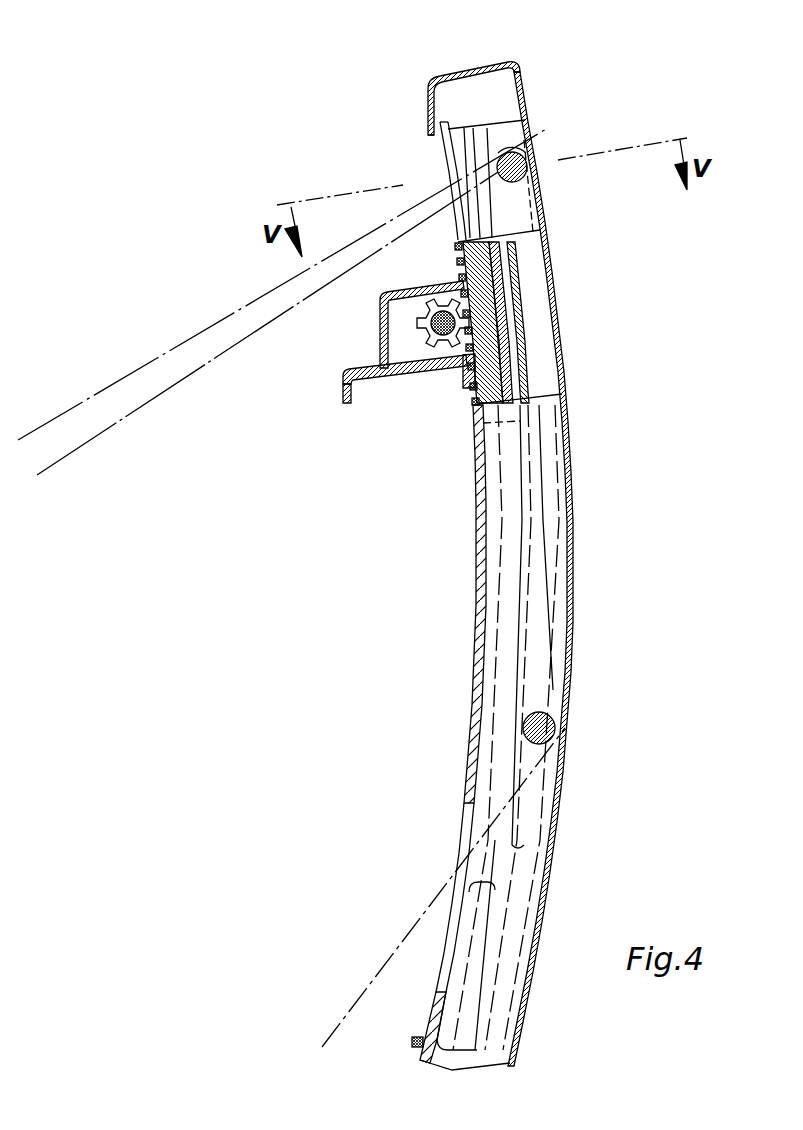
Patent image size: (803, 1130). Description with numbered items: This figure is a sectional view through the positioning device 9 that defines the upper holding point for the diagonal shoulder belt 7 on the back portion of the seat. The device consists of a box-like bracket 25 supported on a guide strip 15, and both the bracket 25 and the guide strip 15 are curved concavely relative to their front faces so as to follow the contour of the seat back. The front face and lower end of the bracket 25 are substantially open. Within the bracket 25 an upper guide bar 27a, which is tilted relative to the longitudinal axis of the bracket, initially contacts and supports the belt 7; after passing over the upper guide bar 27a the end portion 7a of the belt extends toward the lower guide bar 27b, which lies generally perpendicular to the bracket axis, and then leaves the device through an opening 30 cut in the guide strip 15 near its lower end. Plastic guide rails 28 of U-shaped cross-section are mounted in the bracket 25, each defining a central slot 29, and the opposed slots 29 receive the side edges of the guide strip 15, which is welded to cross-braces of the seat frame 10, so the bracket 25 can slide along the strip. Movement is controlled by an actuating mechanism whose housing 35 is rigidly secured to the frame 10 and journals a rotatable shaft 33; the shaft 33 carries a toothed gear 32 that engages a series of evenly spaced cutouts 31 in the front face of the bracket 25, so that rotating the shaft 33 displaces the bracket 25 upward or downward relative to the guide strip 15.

The diagonal shoulder belt 7 is at (242, 312).
The end portion of the belt 7a is at (383, 966).
The positioning device 9 is at (578, 350).
The frame 10 is at (340, 390).
The guide strip 15 is at (480, 527).
The box-like bracket 25 is at (482, 87).
The upper guide bar 27a is at (548, 128).
The lower guide bar 27b is at (543, 727).
The guide rail 28 is at (497, 398).
The central slot 29 is at (513, 273).
The opening 30 is at (465, 828).
The cutouts 31 is at (462, 261).
The toothed gear 32 is at (432, 347).
The rotatable shaft 33 is at (433, 330).
The housing 35 is at (380, 320).